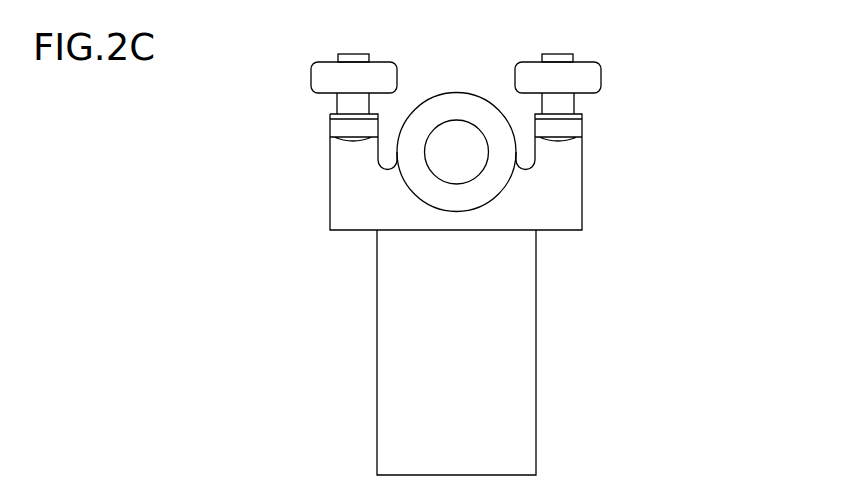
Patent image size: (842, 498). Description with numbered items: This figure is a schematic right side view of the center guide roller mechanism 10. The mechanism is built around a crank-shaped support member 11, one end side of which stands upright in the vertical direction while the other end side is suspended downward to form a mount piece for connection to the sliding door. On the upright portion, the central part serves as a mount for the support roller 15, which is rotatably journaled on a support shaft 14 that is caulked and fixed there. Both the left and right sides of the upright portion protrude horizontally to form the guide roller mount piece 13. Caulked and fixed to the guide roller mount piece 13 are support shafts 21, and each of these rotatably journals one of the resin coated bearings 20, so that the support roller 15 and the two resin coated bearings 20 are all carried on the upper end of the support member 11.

The center guide roller mechanism 10 is at (356, 332).
The support member 11 is at (523, 320).
The guide roller mount piece 13 is at (335, 128).
The support shaft 14 is at (438, 167).
The support roller 15 is at (457, 98).
The resin coated bearing 20 is at (321, 57).
The support shaft 21 is at (339, 102).